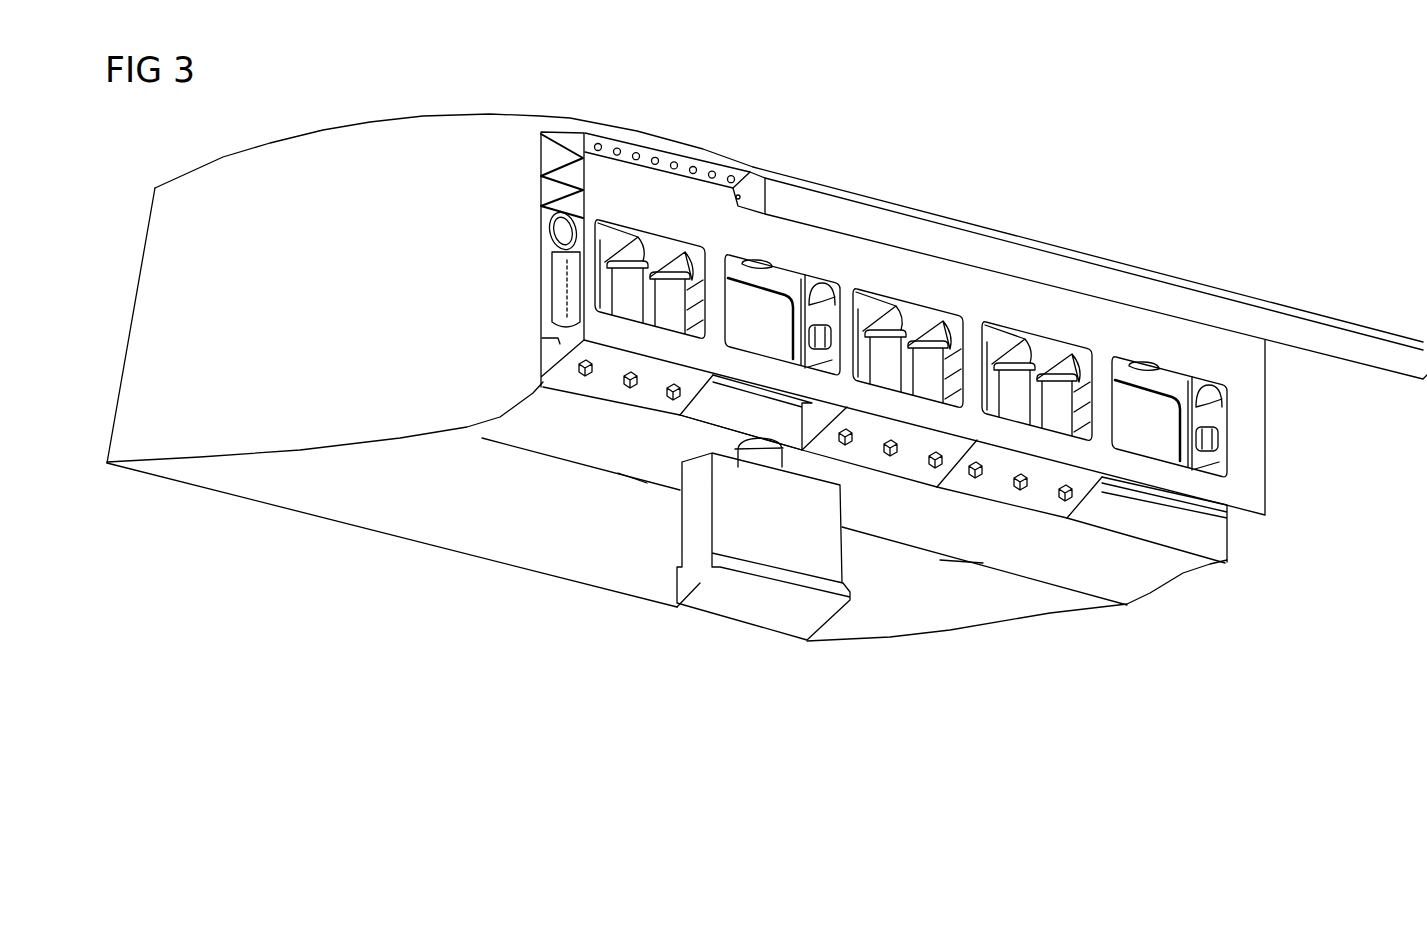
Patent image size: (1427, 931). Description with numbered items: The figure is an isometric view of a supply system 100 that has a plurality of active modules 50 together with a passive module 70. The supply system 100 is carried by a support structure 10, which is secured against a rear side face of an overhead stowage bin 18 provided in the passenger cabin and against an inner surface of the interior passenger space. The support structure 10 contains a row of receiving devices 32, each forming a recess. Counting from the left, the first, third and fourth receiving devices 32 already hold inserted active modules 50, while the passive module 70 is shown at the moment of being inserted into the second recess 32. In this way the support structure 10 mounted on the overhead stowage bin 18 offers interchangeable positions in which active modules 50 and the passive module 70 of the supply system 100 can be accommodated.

The support structure 10 is at (1258, 545).
The overhead stowage bin 18 is at (347, 160).
The receiving device 32 is at (1163, 532).
The active module 50 is at (603, 403).
The passive module 70 is at (727, 655).
The supply system 100 is at (1160, 219).